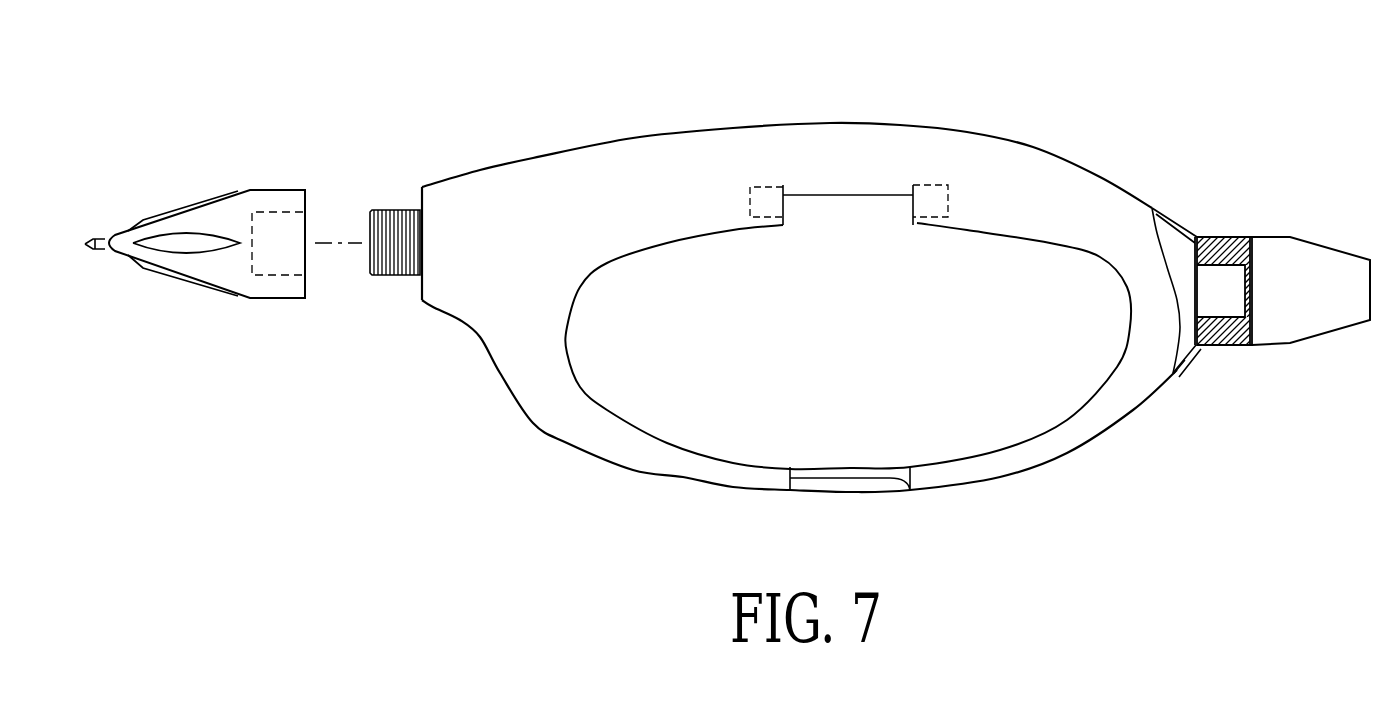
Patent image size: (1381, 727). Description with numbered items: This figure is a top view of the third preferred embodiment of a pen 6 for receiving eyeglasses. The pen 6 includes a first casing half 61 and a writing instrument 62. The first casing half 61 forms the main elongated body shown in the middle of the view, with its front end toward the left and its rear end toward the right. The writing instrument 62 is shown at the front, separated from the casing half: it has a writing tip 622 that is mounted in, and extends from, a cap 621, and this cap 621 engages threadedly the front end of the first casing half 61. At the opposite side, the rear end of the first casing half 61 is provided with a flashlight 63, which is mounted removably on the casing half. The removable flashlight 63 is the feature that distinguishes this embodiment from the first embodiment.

The pen 6 is at (711, 246).
The first casing half 61 is at (900, 153).
The writing instrument 62 is at (193, 255).
The cap 621 is at (237, 280).
The writing tip 622 is at (100, 243).
The flashlight 63 is at (1280, 258).